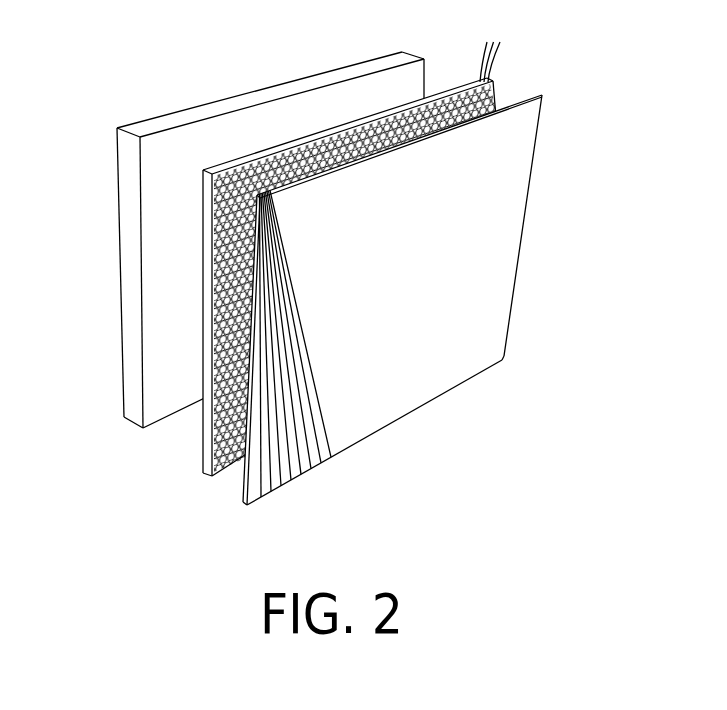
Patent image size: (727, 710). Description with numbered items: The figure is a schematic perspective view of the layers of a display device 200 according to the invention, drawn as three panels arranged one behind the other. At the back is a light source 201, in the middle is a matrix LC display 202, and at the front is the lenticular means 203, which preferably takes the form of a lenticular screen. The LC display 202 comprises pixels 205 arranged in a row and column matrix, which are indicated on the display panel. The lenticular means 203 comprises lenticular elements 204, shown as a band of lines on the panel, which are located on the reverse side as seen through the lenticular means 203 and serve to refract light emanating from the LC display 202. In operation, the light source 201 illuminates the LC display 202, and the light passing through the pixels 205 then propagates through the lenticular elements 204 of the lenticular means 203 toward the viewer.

The display device 200 is at (336, 259).
The light source 201 is at (298, 87).
The matrix LC display 202 is at (433, 93).
The lenticular means 203 is at (532, 180).
The lenticular elements 204 is at (316, 393).
The pixels 205 is at (497, 48).